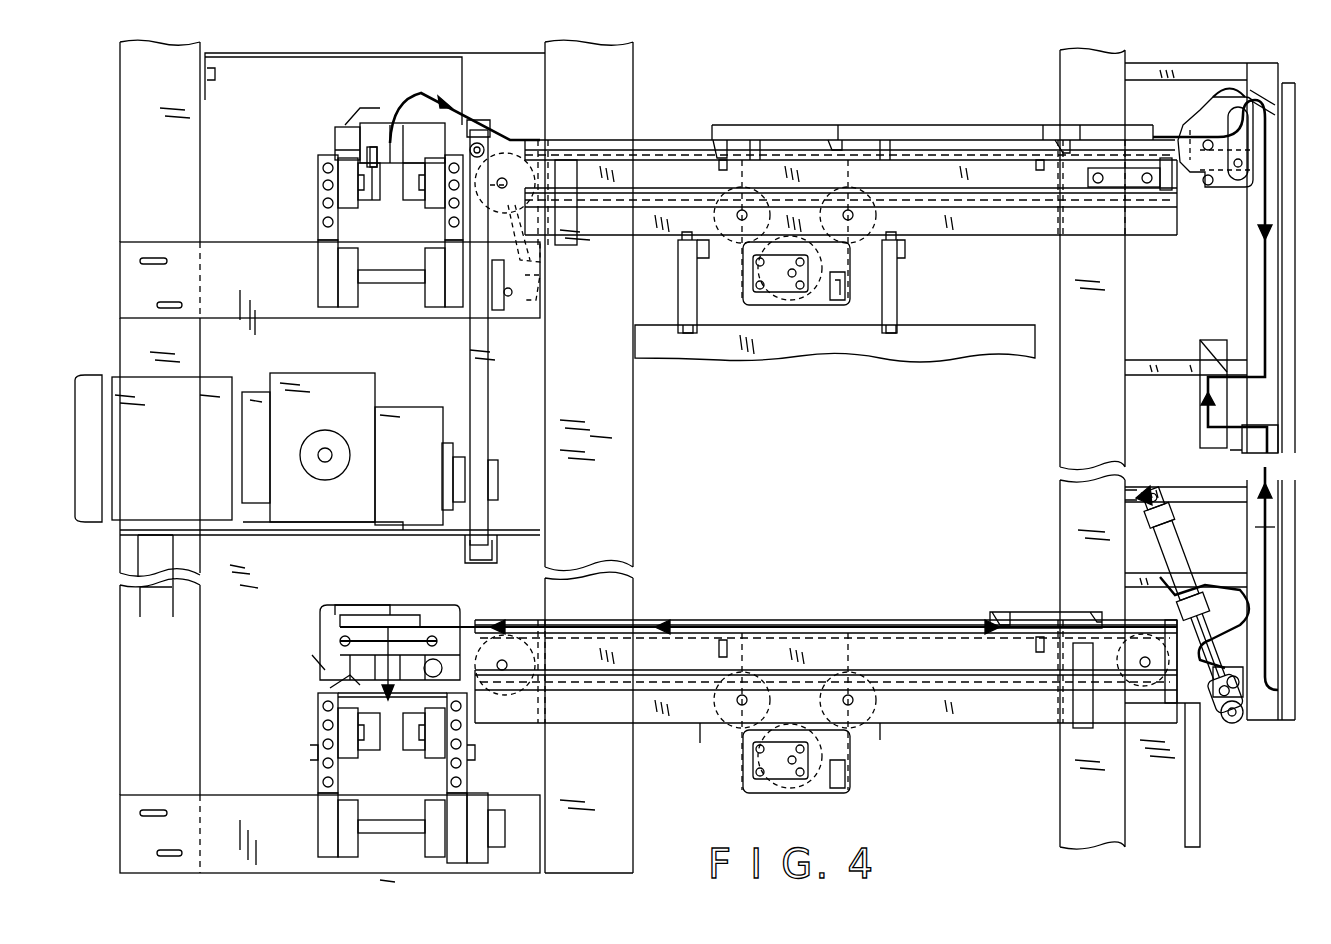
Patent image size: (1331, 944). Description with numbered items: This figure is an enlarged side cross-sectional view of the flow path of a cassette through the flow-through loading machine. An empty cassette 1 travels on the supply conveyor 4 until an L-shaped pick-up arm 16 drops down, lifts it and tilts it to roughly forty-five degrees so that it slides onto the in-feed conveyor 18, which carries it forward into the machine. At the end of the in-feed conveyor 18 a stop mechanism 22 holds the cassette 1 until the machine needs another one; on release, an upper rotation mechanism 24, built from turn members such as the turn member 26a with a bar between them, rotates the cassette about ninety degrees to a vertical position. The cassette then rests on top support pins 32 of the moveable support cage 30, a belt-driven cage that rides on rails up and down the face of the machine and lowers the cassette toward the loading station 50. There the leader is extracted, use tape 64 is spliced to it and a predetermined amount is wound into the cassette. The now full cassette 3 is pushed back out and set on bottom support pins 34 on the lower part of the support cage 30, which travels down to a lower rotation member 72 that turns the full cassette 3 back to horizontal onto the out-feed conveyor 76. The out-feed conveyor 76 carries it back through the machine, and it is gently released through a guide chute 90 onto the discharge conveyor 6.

The cassette 1 is at (342, 140).
The full cassette 3 is at (1035, 612).
The supply conveyor 4 is at (312, 190).
The discharge conveyor 6 is at (310, 718).
The pick-up arm 16 is at (383, 188).
The in-feed conveyor 18 is at (664, 142).
The stop mechanism 22 is at (1162, 140).
The upper rotation mechanism 24 is at (1230, 120).
The turn member 26a is at (1240, 123).
The moveable support cage 30 is at (1293, 252).
The top support pins 32 is at (1248, 197).
The bottom support pins 34 is at (1255, 440).
The loading station 50 is at (1194, 421).
The use tape 64 is at (1190, 775).
The lower rotation member 72 is at (1263, 698).
The out-feed conveyor 76 is at (773, 625).
The guide chute 90 is at (325, 697).